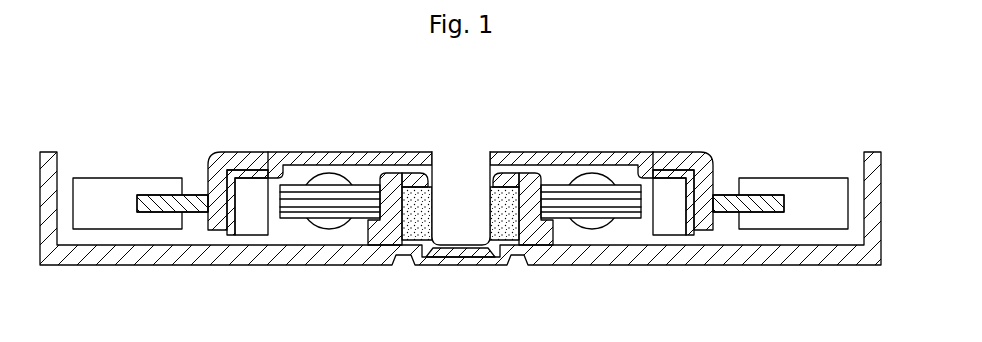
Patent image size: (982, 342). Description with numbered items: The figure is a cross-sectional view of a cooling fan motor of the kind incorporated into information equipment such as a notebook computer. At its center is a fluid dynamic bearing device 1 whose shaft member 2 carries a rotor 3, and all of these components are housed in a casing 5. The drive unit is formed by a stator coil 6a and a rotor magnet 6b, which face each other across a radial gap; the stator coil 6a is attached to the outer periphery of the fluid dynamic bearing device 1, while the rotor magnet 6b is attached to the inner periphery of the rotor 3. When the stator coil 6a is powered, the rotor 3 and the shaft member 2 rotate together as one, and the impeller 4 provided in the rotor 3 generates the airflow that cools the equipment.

The fluid dynamic bearing device 1 is at (515, 170).
The shaft member 2 is at (457, 165).
The rotor 3 is at (597, 152).
The impeller 4 is at (108, 190).
The casing 5 is at (332, 257).
The stator coil 6a is at (627, 207).
The rotor magnet 6b is at (253, 222).